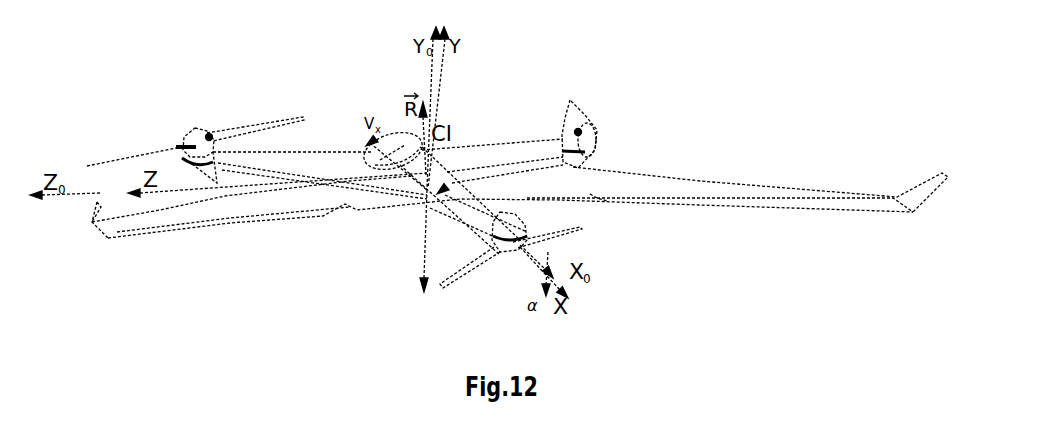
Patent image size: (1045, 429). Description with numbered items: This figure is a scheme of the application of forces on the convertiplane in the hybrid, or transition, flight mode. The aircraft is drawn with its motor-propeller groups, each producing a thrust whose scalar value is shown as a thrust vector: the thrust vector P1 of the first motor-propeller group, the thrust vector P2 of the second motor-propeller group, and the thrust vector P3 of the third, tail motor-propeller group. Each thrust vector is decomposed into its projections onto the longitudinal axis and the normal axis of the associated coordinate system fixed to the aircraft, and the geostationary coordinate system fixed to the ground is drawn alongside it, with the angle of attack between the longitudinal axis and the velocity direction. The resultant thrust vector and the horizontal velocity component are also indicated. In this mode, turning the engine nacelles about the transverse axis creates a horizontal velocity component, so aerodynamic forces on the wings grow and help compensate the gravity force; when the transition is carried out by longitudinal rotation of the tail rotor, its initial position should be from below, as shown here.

The scalar value of the MPG thrust vector (1) P1 is at (562, 36).
The scalar value of the MPG thrust vector (2) P2 is at (179, 52).
The scalar value of the MPG thrust vector (3) P3 is at (497, 176).